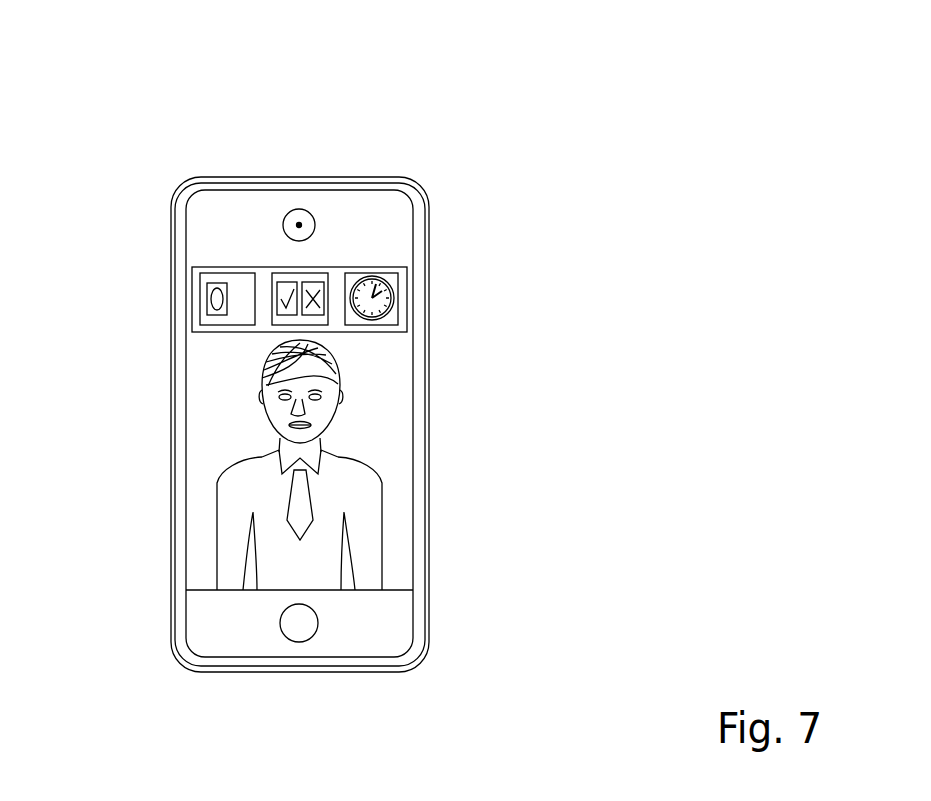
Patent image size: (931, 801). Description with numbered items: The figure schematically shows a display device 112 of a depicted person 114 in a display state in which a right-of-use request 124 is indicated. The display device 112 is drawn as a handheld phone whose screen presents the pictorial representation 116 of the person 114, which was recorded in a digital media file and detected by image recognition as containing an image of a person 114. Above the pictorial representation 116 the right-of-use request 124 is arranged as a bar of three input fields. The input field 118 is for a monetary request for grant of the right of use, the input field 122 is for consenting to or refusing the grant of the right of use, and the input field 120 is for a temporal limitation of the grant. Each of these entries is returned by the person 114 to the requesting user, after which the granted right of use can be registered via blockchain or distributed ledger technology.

The display device 112 is at (288, 150).
The person 114 is at (252, 488).
The pictorial representation 116 is at (236, 428).
The input field for a monetary request 118 is at (231, 274).
The input field for a temporal limitation 120 is at (408, 298).
The input field for consenting or refusing 122 is at (309, 270).
The right-of-use request 124 is at (391, 270).